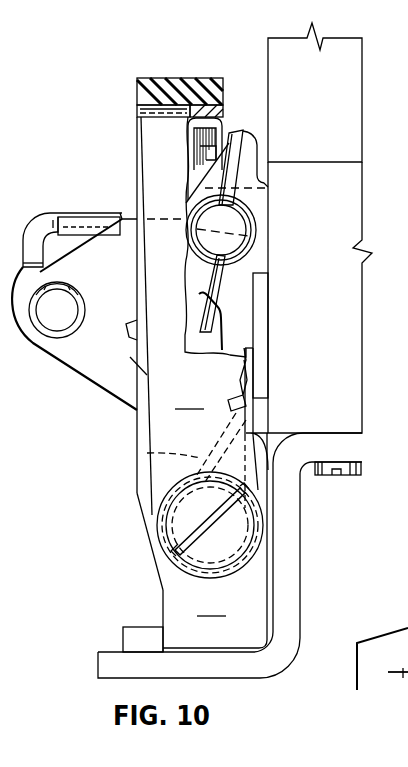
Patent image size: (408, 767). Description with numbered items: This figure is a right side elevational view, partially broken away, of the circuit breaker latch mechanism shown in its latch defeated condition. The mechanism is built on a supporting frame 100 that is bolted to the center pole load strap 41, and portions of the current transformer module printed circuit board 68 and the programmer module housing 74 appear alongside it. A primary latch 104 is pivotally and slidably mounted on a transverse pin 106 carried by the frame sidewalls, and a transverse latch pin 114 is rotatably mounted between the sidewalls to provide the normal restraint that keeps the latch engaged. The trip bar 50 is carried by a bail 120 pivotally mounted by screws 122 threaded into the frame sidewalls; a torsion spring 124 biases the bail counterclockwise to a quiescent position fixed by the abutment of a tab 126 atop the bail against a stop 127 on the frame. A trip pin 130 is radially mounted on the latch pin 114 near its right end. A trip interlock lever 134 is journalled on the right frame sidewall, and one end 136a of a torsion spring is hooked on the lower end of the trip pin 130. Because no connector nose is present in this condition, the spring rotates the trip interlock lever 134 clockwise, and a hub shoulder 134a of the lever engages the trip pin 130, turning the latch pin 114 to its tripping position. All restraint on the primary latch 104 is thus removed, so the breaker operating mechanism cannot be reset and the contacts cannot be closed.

The load strap 41 is at (293, 565).
The trip bar 50 is at (190, 78).
The printed circuit board 68 is at (352, 360).
The housing 74 is at (350, 95).
The supporting frame 100 is at (179, 636).
The primary latch 104 is at (67, 213).
The transverse pin 106 is at (58, 328).
The latch pin 114 is at (249, 222).
The bail 120 is at (140, 384).
The screws 122 is at (163, 517).
The torsion spring 124 is at (147, 453).
The tab 126 is at (190, 137).
The stop 127 is at (200, 165).
The trip pin 130 is at (243, 135).
The trip interlock lever 134 is at (132, 358).
The hub shoulder 134a is at (217, 288).
The spring end 136a is at (223, 328).